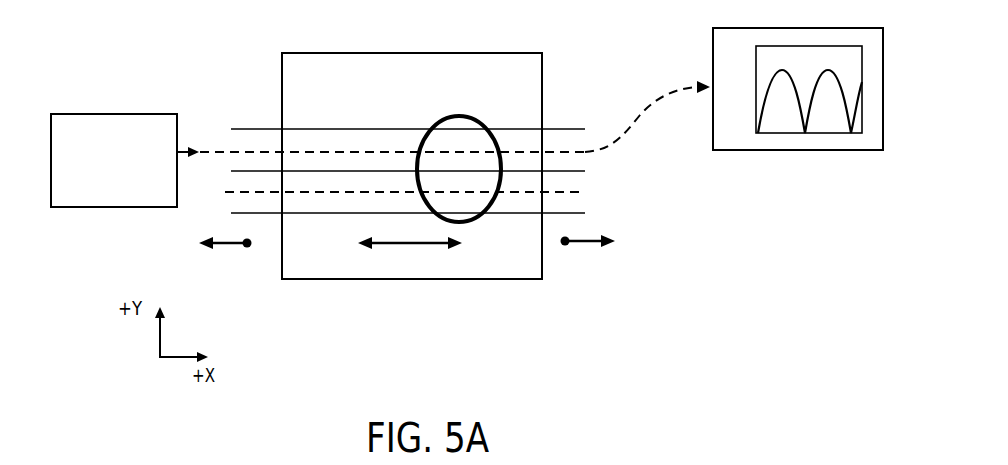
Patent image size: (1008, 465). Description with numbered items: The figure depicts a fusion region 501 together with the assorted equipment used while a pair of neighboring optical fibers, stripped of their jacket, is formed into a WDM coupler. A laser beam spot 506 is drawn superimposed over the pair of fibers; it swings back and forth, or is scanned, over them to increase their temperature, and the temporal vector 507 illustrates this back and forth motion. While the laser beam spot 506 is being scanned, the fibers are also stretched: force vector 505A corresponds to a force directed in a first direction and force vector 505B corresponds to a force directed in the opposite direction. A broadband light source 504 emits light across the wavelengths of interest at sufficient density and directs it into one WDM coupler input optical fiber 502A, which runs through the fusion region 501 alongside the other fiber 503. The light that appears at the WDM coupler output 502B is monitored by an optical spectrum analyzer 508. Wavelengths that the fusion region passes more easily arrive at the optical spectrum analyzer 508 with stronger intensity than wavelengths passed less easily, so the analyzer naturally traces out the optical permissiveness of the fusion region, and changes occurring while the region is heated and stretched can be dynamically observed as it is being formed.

The fusion region 501 is at (458, 279).
The WDM coupler input optical fiber 502A is at (201, 152).
The WDM coupler output 502B is at (651, 101).
The second light path 503 is at (222, 191).
The broadband light source 504 is at (122, 207).
The force vector 505A is at (225, 245).
The force vector 505B is at (585, 243).
The laser beam spot 506 is at (458, 115).
The temporal vector 507 is at (394, 245).
The optical spectrum analyzer 508 is at (733, 150).